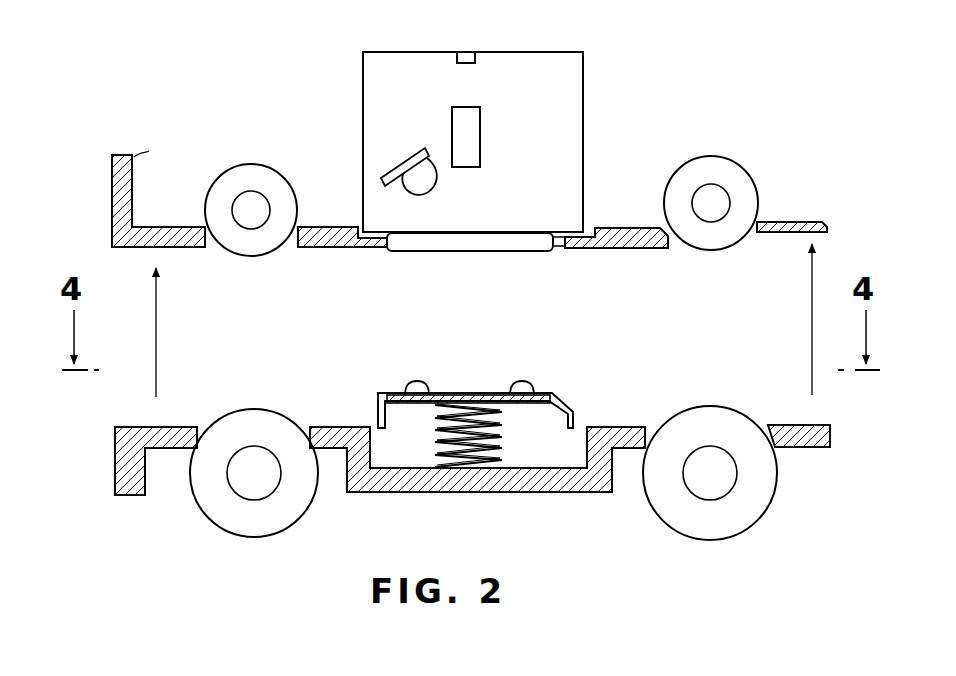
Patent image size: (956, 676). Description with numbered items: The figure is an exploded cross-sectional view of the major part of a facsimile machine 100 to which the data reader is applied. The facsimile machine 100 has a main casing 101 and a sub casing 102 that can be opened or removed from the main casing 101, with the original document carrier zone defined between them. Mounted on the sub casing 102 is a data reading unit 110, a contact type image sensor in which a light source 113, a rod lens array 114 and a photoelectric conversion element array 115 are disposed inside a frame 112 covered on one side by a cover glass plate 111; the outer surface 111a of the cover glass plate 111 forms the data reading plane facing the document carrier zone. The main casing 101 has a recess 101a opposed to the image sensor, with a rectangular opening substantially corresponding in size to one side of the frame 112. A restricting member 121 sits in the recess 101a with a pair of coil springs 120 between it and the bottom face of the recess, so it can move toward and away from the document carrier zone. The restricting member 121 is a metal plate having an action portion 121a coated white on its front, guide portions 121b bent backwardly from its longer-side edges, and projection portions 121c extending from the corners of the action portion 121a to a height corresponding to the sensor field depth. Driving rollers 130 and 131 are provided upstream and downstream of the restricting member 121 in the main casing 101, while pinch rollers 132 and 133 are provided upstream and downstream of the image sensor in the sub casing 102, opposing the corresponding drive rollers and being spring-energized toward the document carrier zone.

The facsimile machine 100 is at (717, 82).
The main casing 101 is at (120, 458).
The recess 101a is at (582, 482).
The sub casing 102 is at (118, 200).
The data reading unit 110 is at (356, 96).
The cover glass plate 111 is at (540, 252).
The outer surface 111a is at (458, 255).
The frame 112 is at (583, 68).
The light source 113 is at (390, 180).
The rod lens array 114 is at (478, 127).
The photoelectric conversion element array 115 is at (476, 57).
The coil springs 120 is at (470, 462).
The restricting member 121 is at (578, 383).
The action portion 121a is at (465, 394).
The guide portions 121b is at (376, 412).
The projection portions 121c is at (410, 384).
The driving roller 130 is at (743, 517).
The driving roller 131 is at (283, 520).
The pinch roller 132 is at (743, 165).
The pinch roller 133 is at (252, 176).